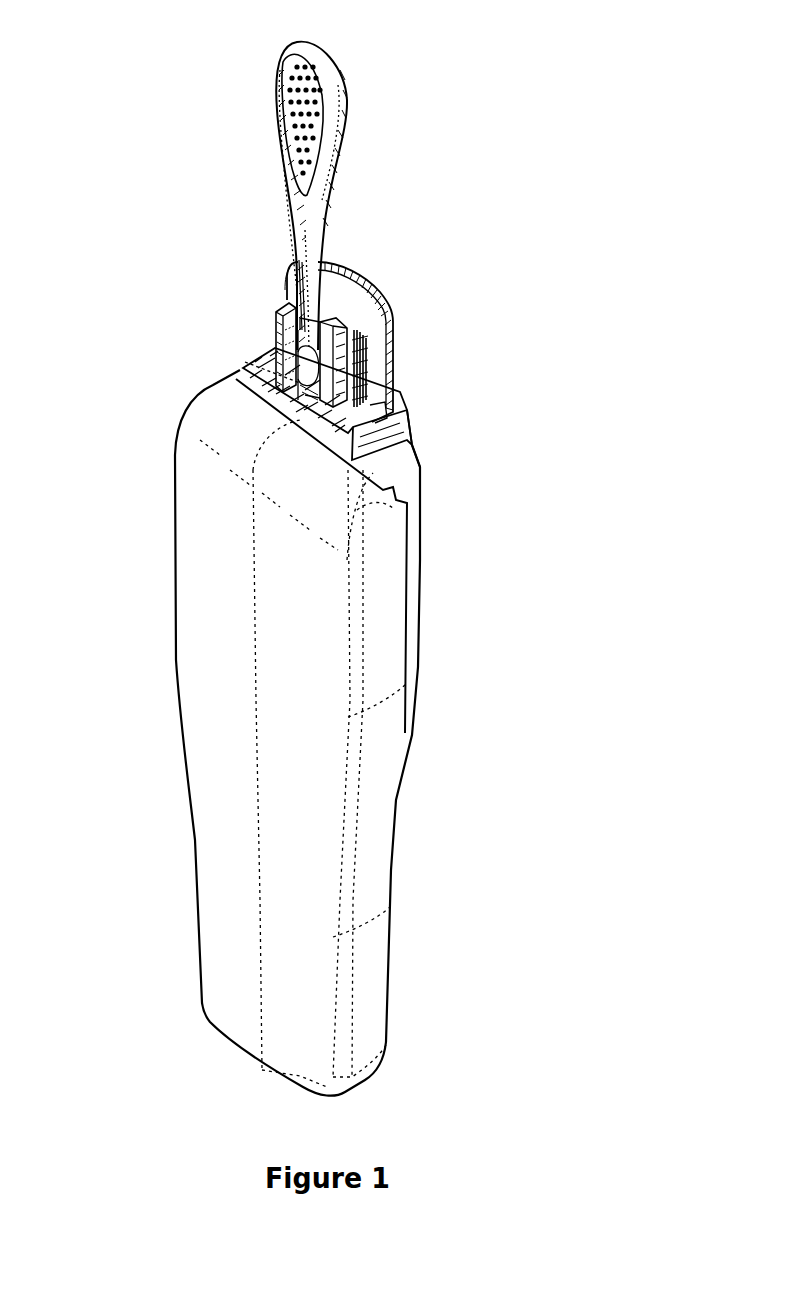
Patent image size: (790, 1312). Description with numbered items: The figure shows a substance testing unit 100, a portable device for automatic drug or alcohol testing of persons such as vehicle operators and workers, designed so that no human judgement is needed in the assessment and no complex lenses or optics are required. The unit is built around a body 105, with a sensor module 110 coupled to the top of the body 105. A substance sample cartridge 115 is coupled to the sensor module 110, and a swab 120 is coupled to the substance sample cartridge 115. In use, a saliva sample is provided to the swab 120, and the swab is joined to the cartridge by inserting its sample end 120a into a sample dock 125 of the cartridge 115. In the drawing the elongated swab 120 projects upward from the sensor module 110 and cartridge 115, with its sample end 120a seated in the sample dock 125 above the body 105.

The substance testing unit 100 is at (522, 167).
The body 105 is at (204, 537).
The sensor module 110 is at (420, 463).
The substance sample cartridge 115 is at (372, 284).
The swab 120 is at (279, 132).
The sample end 120a is at (290, 356).
The sample dock 125 is at (274, 326).